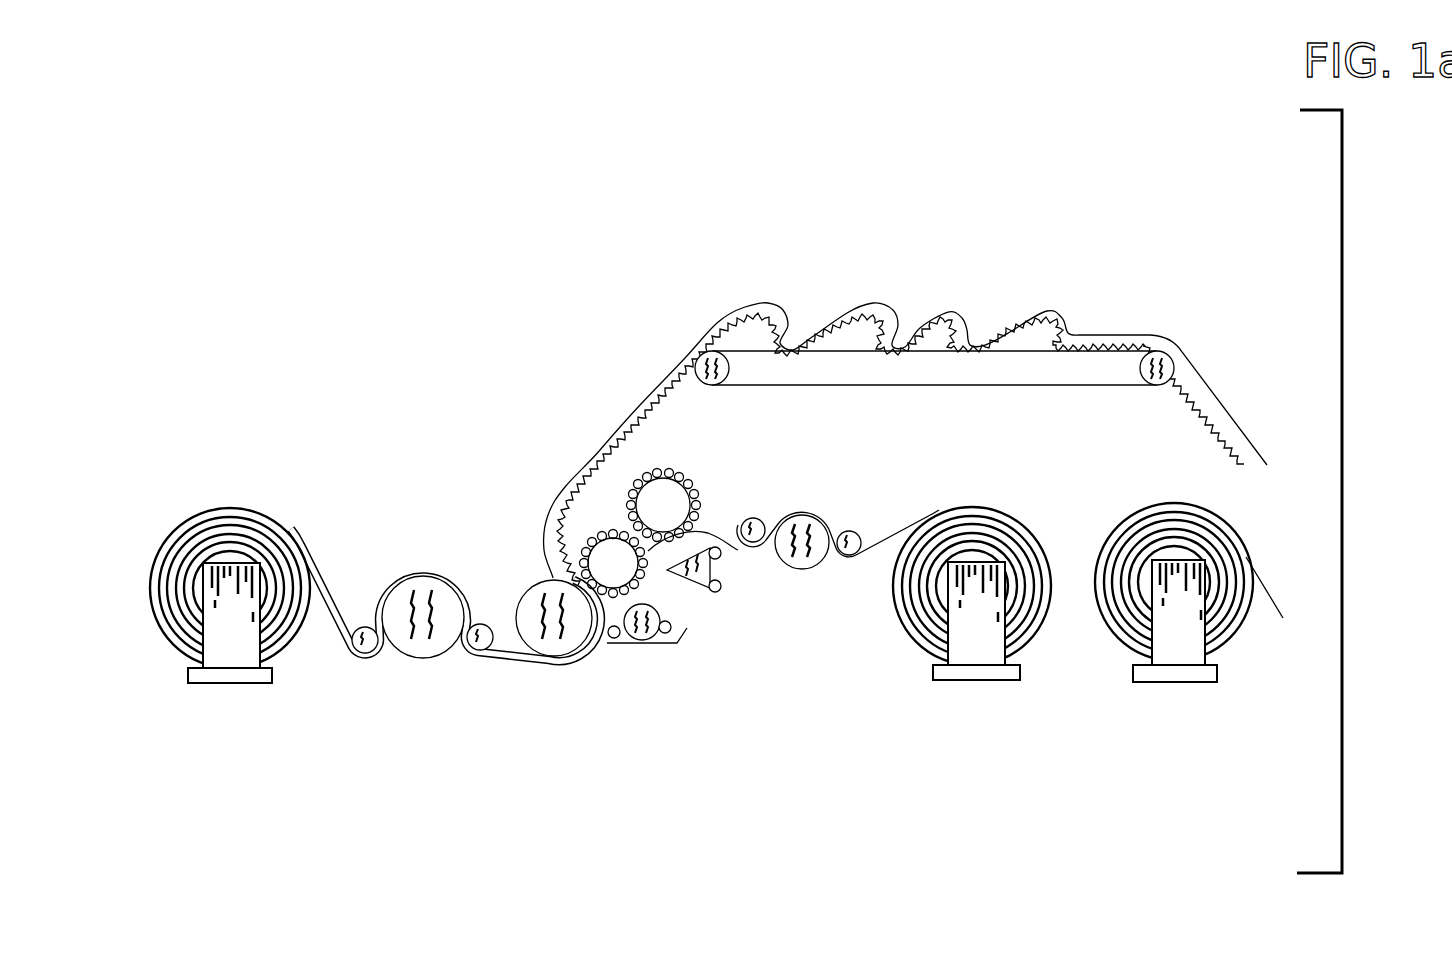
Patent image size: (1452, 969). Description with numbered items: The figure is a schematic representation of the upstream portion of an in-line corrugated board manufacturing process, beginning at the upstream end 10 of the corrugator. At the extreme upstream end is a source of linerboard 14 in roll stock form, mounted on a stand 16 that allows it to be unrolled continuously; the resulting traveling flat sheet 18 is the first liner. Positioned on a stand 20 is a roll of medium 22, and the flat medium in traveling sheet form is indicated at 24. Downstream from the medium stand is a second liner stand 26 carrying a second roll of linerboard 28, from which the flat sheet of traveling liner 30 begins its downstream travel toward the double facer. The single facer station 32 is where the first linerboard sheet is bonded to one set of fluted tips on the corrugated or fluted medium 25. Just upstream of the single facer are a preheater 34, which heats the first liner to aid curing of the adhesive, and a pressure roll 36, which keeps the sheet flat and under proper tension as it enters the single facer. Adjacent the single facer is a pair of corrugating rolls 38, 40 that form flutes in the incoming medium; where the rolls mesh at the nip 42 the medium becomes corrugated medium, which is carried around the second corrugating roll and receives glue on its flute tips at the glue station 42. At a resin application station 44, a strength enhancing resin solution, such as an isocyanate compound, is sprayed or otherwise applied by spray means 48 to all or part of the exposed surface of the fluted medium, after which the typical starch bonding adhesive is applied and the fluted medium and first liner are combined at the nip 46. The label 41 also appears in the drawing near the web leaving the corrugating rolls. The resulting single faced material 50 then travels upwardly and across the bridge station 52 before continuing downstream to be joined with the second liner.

The upstream end 10 is at (300, 400).
The source of linerboard 14 is at (216, 580).
The stand 16 is at (238, 630).
The traveling flat sheet 18 is at (333, 603).
The stand 20 is at (975, 620).
The roll of medium 22 is at (991, 573).
The flat medium 24 is at (858, 552).
The corrugated or fluted medium 25 is at (637, 433).
The second liner stand 26 is at (1180, 645).
The second roll of linerboard 28 is at (1156, 592).
The traveling liner 30 is at (1268, 578).
The single facer station 32 is at (542, 482).
The preheater 34 is at (415, 596).
The pressure roll 36 is at (558, 640).
The corrugating roll 38 is at (600, 575).
The corrugating roll 40 is at (650, 517).
The web 41 is at (694, 486).
The nip / glue station 42 is at (642, 645).
The resin application station 44 is at (711, 612).
The nip / glue station 46 is at (603, 633).
The spray means 48 is at (667, 570).
The single faced material 50 is at (891, 430).
The bridge station 52 is at (1088, 368).